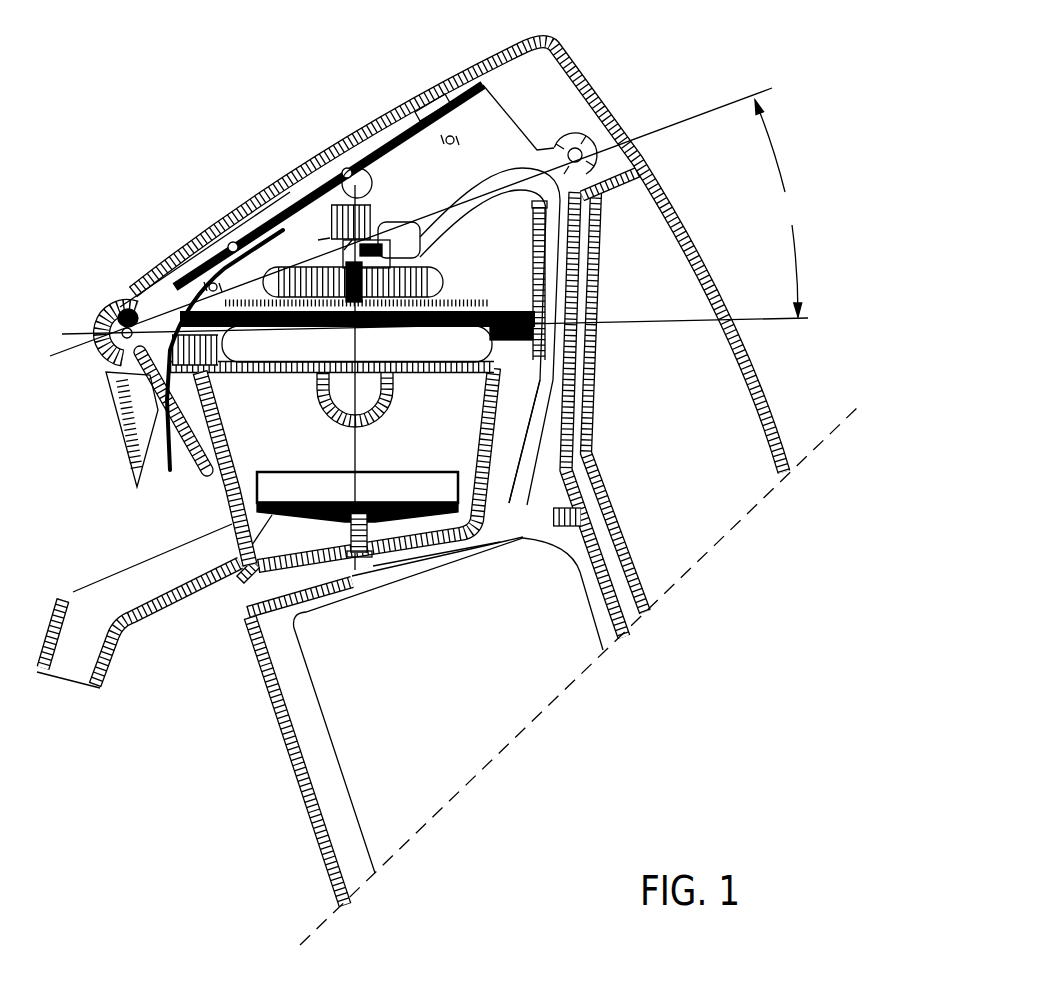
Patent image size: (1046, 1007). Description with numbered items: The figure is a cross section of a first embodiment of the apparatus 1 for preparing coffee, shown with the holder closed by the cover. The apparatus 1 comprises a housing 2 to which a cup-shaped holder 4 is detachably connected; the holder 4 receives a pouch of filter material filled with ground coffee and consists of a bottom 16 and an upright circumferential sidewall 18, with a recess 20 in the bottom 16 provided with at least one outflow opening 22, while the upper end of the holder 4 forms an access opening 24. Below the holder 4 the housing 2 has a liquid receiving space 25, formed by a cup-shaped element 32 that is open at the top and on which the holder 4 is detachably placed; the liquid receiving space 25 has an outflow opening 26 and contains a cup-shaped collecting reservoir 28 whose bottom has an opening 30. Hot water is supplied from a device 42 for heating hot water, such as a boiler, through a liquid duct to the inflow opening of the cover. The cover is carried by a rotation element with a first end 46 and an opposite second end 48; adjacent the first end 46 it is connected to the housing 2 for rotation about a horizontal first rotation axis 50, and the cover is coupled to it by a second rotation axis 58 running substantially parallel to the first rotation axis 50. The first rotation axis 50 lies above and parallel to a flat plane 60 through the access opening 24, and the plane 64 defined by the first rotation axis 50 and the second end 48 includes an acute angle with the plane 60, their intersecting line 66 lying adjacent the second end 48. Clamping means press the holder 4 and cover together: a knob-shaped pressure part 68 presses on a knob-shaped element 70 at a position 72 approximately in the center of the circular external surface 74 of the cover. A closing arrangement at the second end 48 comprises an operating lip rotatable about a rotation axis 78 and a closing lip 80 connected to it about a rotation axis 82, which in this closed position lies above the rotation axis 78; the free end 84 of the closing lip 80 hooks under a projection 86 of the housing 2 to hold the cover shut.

The apparatus 1 is at (656, 719).
The housing 2 is at (722, 303).
The holder 4 is at (440, 375).
The bottom 16 is at (258, 376).
The sidewall 18 is at (545, 330).
The recess 20 is at (394, 410).
The outflow opening 22 is at (363, 424).
The access opening 24 is at (443, 285).
The liquid receiving space 25 is at (296, 467).
The outflow opening 26 is at (112, 597).
The collecting reservoir 28 is at (300, 514).
The opening 30 is at (230, 588).
The cup-shaped element 32 is at (497, 428).
The device for heating hot water 42 is at (345, 730).
The first end 46 is at (598, 148).
The second end 48 is at (153, 312).
The first rotation axis 50 is at (578, 146).
The second rotation axis 58 is at (318, 240).
The flat plane 60 is at (677, 324).
The plane 64 is at (683, 122).
The intersecting line 66 is at (103, 327).
The knob-shaped pressure part 68 is at (372, 183).
The knob-shaped element 70 is at (344, 250).
The position 72 is at (372, 220).
The external surface 74 is at (443, 274).
The rotation axis 78 is at (140, 340).
The closing lip 80 is at (170, 472).
The rotation axis 82 is at (118, 300).
The free end 84 is at (228, 462).
The projection 86 is at (196, 472).